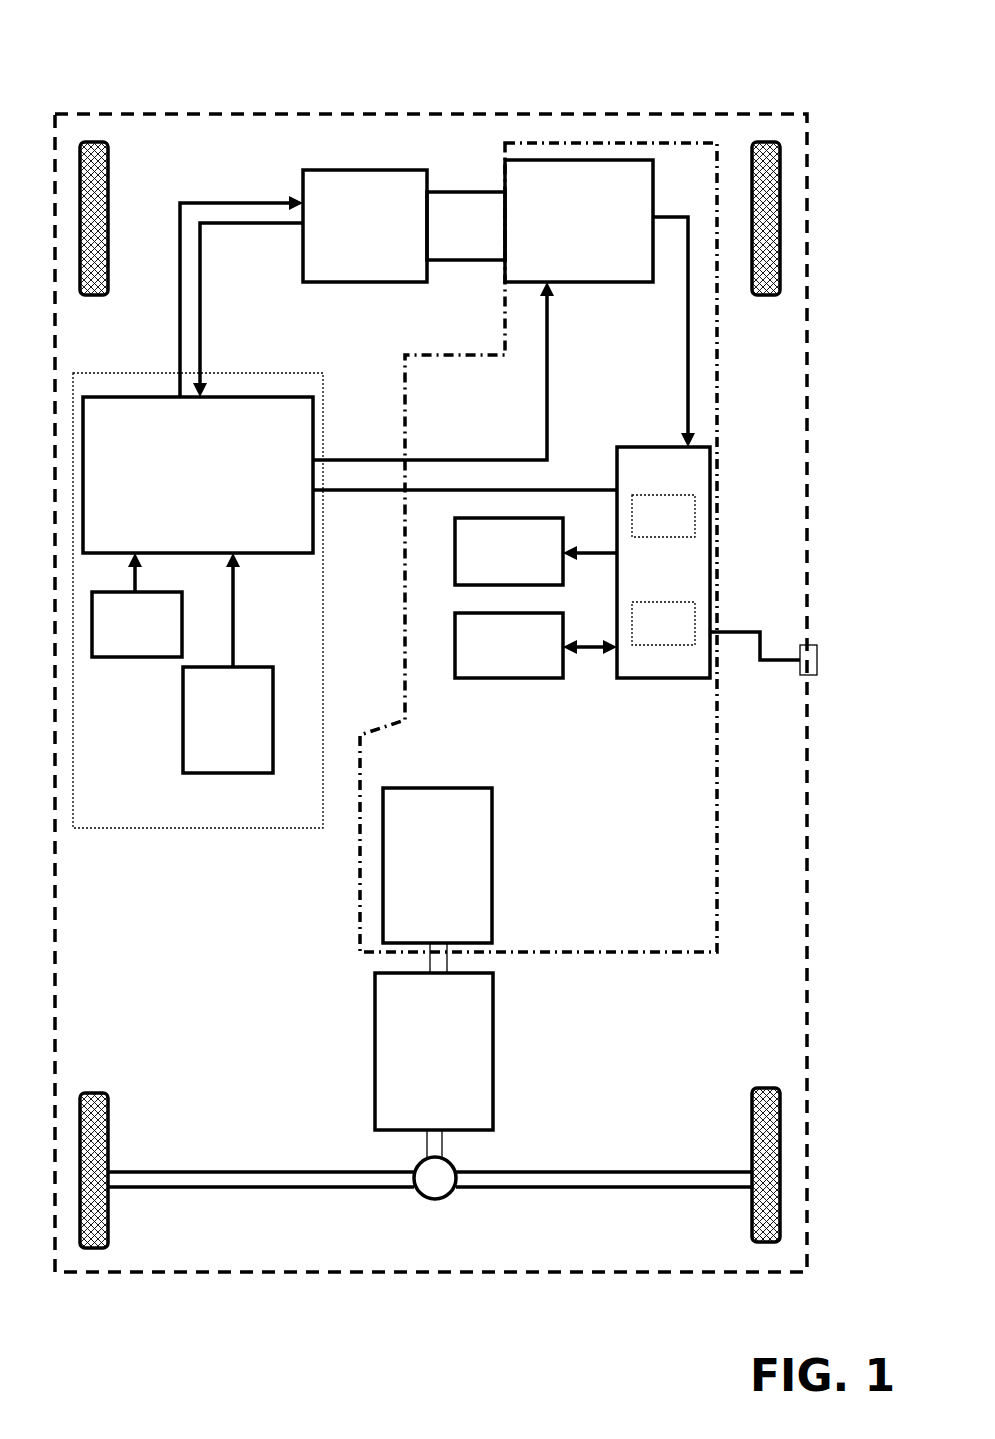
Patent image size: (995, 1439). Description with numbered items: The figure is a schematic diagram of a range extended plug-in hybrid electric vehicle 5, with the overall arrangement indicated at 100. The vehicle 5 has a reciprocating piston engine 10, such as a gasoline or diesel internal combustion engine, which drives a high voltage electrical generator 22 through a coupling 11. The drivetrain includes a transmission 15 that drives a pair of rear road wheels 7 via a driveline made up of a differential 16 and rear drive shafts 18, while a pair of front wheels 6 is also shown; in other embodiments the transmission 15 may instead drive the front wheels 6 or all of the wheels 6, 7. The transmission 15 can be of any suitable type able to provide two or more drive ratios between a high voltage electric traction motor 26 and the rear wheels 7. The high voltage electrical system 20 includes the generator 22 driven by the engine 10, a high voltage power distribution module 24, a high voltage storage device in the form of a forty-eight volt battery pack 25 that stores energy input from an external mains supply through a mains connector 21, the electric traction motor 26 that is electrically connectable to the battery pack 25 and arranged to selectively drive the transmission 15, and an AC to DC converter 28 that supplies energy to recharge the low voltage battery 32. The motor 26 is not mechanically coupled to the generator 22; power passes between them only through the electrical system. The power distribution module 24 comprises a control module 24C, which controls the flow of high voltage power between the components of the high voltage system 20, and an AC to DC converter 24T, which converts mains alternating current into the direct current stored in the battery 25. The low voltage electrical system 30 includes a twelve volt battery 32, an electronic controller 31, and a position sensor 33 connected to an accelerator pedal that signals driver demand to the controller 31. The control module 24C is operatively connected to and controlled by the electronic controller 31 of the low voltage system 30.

The vehicle 100 is at (772, 47).
The range extended plug-in hybrid electric vehicle 5 is at (640, 112).
The front wheels 6 is at (100, 278).
The rear road wheels 7 is at (100, 1210).
The reciprocating piston engine 10 is at (351, 237).
The coupling 11 is at (452, 237).
The transmission 15 is at (420, 1047).
The differential 16 is at (424, 1180).
The rear drive shafts 18 is at (310, 1172).
The high voltage electrical system 20 is at (577, 953).
The mains connector 21 is at (798, 665).
The high voltage electrical generator 22 is at (565, 233).
The high voltage power distribution module 24 is at (663, 562).
The control module 24C is at (643, 528).
The AC to DC converter 24T is at (643, 635).
The 48 volt battery pack 25 is at (495, 657).
The high voltage electric traction motor 26 is at (423, 864).
The AC to DC converter 28 is at (495, 563).
The low voltage electrical system 30 is at (242, 830).
The electronic controller 31 is at (184, 472).
The 12 volt battery 32 is at (214, 743).
The position sensor 33 is at (123, 637).